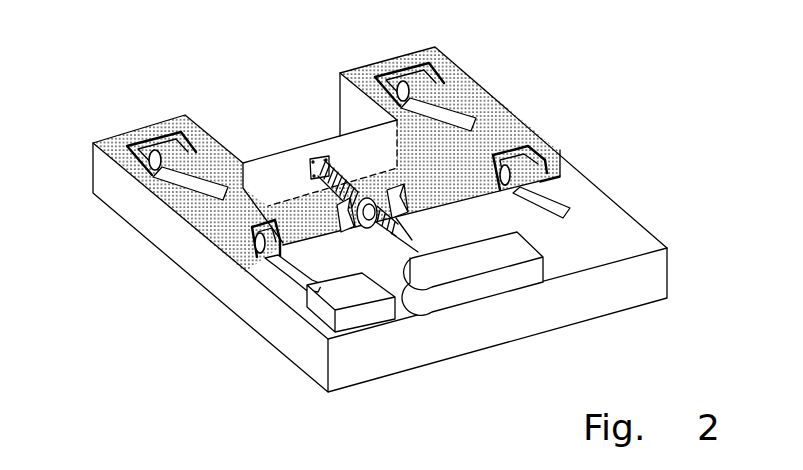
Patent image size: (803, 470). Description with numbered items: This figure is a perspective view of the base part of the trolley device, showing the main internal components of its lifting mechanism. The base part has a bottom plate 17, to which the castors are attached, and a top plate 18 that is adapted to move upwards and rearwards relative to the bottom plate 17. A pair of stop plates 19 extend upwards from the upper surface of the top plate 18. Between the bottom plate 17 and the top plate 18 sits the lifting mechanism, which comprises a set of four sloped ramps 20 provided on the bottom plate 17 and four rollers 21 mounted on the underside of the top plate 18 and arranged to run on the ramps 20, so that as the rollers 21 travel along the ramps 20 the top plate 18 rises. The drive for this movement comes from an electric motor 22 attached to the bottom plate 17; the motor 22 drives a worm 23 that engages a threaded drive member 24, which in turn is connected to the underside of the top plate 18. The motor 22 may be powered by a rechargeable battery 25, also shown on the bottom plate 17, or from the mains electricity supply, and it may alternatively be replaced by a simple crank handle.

The bottom plate 17 is at (593, 322).
The top plate 18 is at (497, 122).
The stop plates 19 is at (543, 148).
The sloped ramps 20 is at (468, 124).
The rollers 21 is at (145, 166).
The electric motor 22 is at (435, 295).
The worm 23 is at (311, 166).
The threaded drive member 24 is at (378, 190).
The rechargeable battery 25 is at (320, 315).